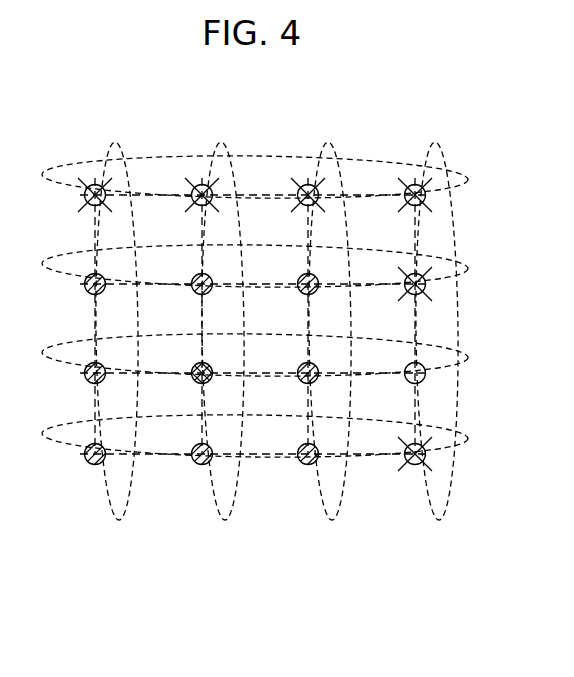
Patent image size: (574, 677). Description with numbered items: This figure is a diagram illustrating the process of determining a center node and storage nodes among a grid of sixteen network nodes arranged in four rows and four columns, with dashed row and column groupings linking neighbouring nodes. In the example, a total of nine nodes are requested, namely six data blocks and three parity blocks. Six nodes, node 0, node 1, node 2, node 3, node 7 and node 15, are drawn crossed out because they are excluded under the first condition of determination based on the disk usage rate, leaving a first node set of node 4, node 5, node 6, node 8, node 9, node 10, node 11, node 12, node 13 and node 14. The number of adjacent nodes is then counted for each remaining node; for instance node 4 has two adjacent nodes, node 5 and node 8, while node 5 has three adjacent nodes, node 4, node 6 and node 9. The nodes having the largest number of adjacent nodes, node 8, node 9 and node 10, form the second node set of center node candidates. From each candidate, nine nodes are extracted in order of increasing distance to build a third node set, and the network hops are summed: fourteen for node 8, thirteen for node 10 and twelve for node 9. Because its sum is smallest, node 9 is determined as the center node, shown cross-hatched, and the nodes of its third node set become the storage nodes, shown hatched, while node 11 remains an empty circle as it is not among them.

The node 0 is at (86, 187).
The node 1 is at (193, 187).
The node 2 is at (299, 187).
The node 3 is at (406, 187).
The node 4 is at (83, 273).
The node 5 is at (190, 273).
The node 6 is at (296, 273).
The node 7 is at (406, 276).
The node 8 is at (83, 362).
The node 9 is at (190, 362).
The node 10 is at (294, 362).
The node 11 is at (401, 362).
The node 12 is at (81, 443).
The node 13 is at (188, 443).
The node 14 is at (294, 443).
The node 15 is at (404, 446).